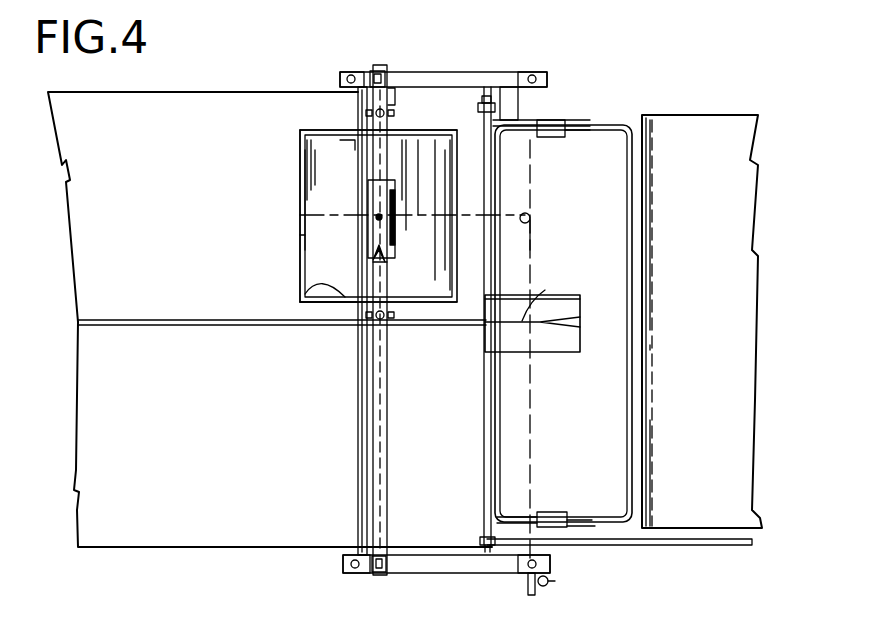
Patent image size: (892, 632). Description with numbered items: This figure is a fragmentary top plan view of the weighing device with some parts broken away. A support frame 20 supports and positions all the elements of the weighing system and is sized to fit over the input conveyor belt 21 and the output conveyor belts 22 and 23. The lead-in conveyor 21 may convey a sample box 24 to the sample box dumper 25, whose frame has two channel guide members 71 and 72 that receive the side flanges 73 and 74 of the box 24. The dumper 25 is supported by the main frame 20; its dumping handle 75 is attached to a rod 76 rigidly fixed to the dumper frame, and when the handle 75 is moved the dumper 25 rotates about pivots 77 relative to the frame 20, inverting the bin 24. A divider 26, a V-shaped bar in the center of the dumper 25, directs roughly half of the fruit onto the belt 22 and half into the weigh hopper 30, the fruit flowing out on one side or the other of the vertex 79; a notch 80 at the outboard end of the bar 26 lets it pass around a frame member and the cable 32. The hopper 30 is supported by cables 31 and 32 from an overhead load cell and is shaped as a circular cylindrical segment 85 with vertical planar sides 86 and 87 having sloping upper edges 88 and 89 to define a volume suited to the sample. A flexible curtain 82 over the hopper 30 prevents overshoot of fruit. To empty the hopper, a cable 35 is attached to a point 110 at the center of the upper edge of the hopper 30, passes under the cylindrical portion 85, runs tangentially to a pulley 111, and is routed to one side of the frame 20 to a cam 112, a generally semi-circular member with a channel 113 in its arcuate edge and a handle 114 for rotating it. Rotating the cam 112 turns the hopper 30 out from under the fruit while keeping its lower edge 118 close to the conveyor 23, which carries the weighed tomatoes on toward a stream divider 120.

The support frame 20 is at (388, 245).
The input conveyor belt 21 is at (716, 225).
The output conveyor belt 22 is at (194, 417).
The output conveyor belt 23 is at (170, 237).
The sample box 24 is at (612, 283).
The sample box dumper 25 is at (532, 105).
The divider 26 is at (558, 342).
The weigh hopper 30 is at (347, 255).
The cable 31 is at (384, 140).
The cable 32 is at (385, 276).
The cable 35 is at (545, 455).
The channel guide member 71 is at (560, 122).
The channel guide member 72 is at (560, 530).
The side flange 73 is at (568, 132).
The side flange 74 is at (568, 515).
The dumping handle 75 is at (690, 546).
The rod 76 is at (484, 460).
The pivots 77 is at (484, 97).
The vertex 79 is at (535, 305).
The notch 80 is at (580, 322).
The flexible curtain 82 is at (358, 384).
The circular cylindrical segment 85 is at (300, 236).
The vertical planar side 86 is at (305, 135).
The vertical planar side 87 is at (325, 303).
The sloping upper edge 88 is at (428, 135).
The sloping upper edge 89 is at (355, 135).
The attachment point 110 is at (298, 215).
The pulley 111 is at (538, 212).
The cam 112 is at (526, 585).
The channel 113 is at (531, 590).
The handle 114 is at (552, 580).
The lower edge 118 is at (302, 180).
The stream divider 120 is at (170, 320).